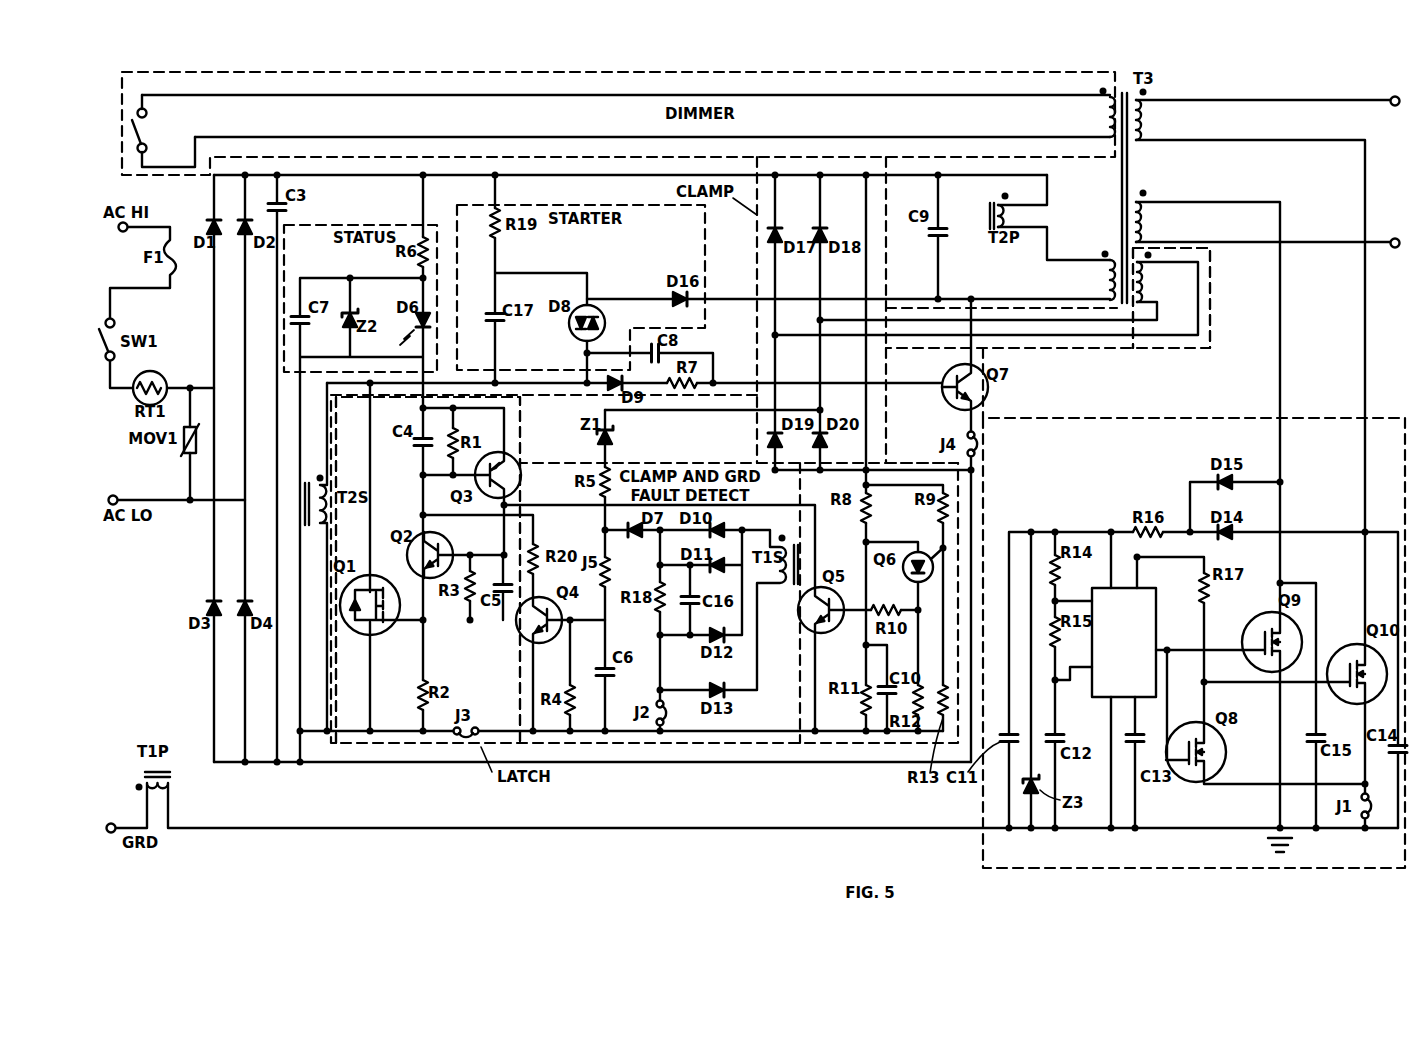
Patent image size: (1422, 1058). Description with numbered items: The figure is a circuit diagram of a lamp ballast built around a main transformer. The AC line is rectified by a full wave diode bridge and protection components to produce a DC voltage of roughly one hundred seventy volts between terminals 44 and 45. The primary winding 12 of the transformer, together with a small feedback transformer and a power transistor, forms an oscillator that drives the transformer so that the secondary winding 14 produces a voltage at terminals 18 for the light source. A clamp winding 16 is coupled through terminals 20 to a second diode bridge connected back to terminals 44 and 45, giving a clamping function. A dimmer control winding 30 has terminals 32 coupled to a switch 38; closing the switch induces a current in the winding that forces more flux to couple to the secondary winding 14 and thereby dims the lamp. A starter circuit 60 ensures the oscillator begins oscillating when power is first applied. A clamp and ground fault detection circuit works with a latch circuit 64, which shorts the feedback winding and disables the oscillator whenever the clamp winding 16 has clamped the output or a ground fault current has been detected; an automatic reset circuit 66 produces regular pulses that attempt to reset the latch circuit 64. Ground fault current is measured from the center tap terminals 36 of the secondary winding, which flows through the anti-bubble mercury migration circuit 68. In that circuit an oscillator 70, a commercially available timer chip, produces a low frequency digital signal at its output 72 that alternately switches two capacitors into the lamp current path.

The primary winding 12 is at (1093, 276).
The secondary winding 14 is at (1166, 166).
The clamp winding 16 is at (1163, 277).
The terminals 18 is at (1270, 162).
The terminals 20 is at (1048, 311).
The dimmer control winding 30 is at (1091, 113).
The terminals 32 is at (626, 116).
The center tap terminals 36 is at (1234, 407).
The switch 38 is at (163, 131).
The terminal 44 is at (592, 778).
The terminal 45 is at (630, 143).
The starter circuit 60 is at (597, 287).
The latch circuit 64 is at (449, 570).
The automatic reset circuit 66 is at (934, 409).
The anti-bubble mercury migration circuit 68 is at (1194, 627).
The oscillator 70 is at (1124, 642).
The output 72 is at (1181, 639).